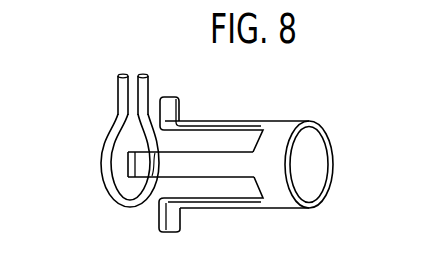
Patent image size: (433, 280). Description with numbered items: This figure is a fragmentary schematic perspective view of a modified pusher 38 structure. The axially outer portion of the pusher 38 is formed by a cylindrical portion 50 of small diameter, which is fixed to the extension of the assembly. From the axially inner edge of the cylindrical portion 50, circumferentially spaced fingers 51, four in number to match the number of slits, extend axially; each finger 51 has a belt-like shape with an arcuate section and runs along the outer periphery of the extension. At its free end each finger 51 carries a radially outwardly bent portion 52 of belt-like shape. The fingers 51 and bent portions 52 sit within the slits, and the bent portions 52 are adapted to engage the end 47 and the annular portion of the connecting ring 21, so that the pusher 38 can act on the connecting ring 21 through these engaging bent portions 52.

The connecting ring 21 is at (93, 158).
The pusher 38 is at (286, 113).
The end 47 is at (142, 75).
The cylindrical portion 50 is at (275, 134).
The finger 51 is at (203, 163).
The radially outwardly bent portion 52 is at (128, 178).